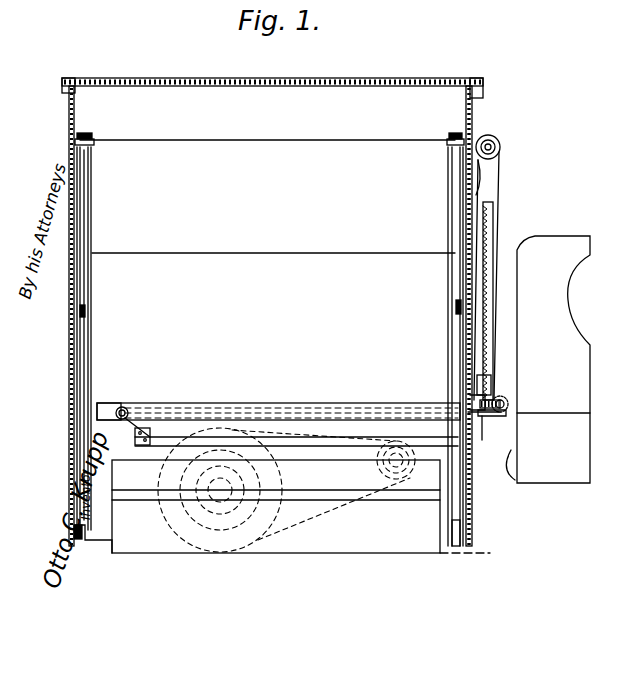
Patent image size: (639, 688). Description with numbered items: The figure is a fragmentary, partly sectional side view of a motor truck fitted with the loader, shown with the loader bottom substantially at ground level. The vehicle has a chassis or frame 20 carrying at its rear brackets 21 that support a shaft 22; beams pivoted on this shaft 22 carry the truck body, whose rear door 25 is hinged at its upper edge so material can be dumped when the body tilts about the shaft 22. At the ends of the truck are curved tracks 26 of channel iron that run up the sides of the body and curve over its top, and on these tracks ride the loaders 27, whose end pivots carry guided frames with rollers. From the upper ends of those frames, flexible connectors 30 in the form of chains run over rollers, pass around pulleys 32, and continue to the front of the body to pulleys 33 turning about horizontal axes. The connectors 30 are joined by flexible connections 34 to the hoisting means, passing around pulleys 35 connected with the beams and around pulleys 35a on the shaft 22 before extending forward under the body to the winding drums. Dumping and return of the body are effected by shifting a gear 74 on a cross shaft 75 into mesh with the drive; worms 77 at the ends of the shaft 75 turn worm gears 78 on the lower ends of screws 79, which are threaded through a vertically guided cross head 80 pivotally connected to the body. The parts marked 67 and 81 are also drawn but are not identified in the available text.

The chassis or frame 20 is at (490, 445).
The brackets 21 is at (128, 423).
The shaft 22 is at (140, 410).
The door 25 is at (78, 280).
The curved tracks 26 is at (82, 230).
The loaders 27 is at (570, 397).
The flexible connectors 30 is at (253, 142).
The pulleys 32 is at (122, 126).
The pulleys 33 is at (500, 146).
The flexible connections 34 is at (498, 186).
The pulleys 35 is at (455, 394).
The pulleys 35a is at (120, 407).
The top beam 67 is at (375, 80).
The gear 74 is at (503, 396).
The cross shaft 75 is at (507, 403).
The worms 77 is at (506, 413).
The worm gears 78 is at (490, 416).
The screws 79 is at (494, 228).
The cross head 80 is at (490, 385).
The pin 81 is at (482, 416).